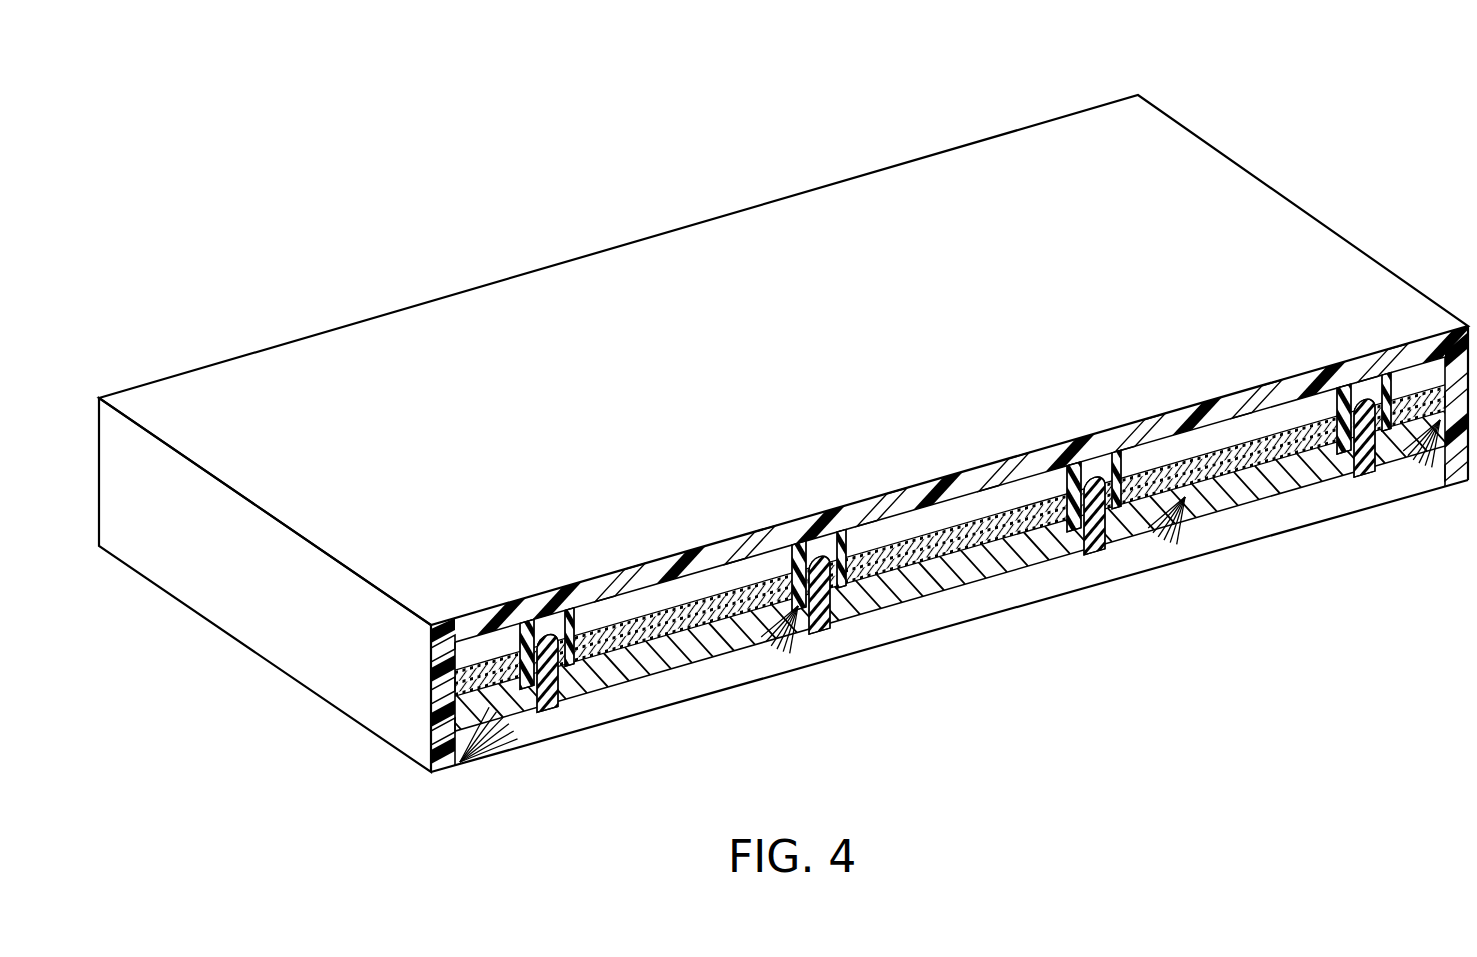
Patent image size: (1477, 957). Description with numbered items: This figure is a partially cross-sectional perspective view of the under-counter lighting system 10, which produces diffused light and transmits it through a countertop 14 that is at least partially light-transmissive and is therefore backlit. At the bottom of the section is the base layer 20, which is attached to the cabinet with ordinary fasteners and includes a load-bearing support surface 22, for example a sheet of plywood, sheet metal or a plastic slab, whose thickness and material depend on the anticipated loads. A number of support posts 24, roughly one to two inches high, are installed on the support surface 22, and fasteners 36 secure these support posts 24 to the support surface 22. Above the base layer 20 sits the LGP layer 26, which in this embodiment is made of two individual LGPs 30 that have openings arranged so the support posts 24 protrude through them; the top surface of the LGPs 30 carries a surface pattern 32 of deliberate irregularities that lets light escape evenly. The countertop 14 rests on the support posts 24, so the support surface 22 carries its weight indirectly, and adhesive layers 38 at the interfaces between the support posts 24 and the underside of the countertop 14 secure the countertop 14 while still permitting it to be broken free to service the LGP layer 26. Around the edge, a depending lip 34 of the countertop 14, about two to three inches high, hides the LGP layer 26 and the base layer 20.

The under-counter lighting system 10 is at (354, 127).
The countertop 14 is at (780, 226).
The base layer 20 is at (972, 585).
The support surface 22 is at (1052, 562).
The support posts 24 is at (575, 607).
The LGP layer 26 is at (916, 568).
The LGPs 30 is at (995, 536).
The surface pattern 32 is at (715, 587).
The depending lip 34 is at (370, 708).
The fasteners 36 is at (557, 692).
The adhesive layers 38 is at (525, 664).